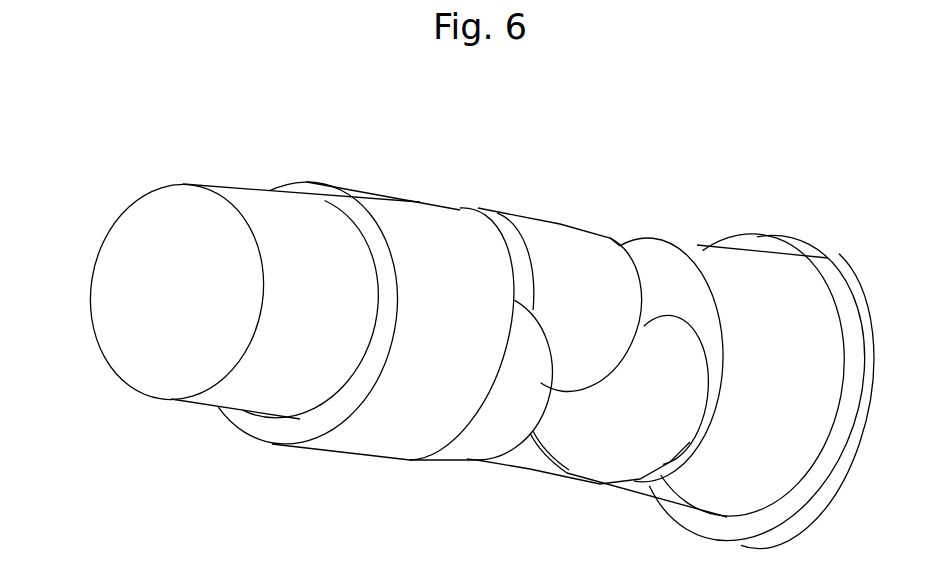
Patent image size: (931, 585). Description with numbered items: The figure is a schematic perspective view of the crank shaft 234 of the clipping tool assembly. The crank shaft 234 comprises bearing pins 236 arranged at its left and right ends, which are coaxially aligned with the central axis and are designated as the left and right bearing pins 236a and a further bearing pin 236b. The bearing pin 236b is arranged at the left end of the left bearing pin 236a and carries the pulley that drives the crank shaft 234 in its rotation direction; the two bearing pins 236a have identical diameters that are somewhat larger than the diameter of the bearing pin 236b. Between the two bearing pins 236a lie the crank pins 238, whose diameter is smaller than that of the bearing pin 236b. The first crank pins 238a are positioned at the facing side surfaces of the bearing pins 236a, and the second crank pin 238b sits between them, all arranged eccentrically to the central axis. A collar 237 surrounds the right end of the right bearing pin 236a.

The crank shaft 234 is at (252, 124).
The bearing pins 236 is at (612, 137).
The bearing pins 236a is at (430, 245).
The bearing pin 236b is at (279, 229).
The collar 237 is at (825, 286).
The crank pins 238 is at (350, 526).
The first crank pins 238a is at (512, 412).
The second crank pin 238b is at (583, 350).